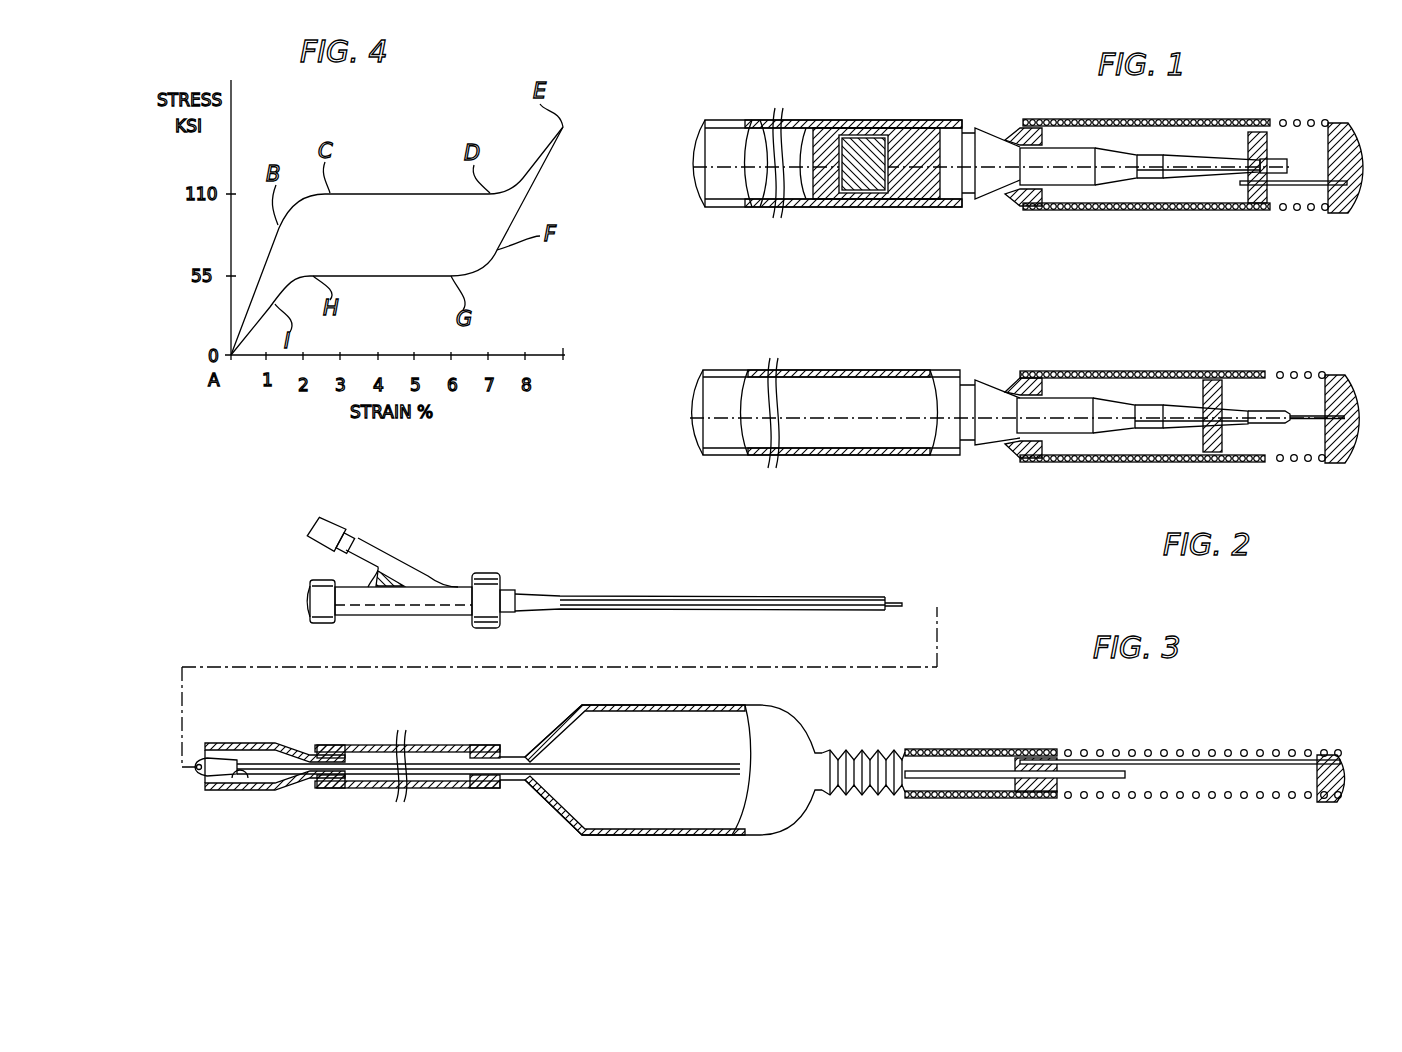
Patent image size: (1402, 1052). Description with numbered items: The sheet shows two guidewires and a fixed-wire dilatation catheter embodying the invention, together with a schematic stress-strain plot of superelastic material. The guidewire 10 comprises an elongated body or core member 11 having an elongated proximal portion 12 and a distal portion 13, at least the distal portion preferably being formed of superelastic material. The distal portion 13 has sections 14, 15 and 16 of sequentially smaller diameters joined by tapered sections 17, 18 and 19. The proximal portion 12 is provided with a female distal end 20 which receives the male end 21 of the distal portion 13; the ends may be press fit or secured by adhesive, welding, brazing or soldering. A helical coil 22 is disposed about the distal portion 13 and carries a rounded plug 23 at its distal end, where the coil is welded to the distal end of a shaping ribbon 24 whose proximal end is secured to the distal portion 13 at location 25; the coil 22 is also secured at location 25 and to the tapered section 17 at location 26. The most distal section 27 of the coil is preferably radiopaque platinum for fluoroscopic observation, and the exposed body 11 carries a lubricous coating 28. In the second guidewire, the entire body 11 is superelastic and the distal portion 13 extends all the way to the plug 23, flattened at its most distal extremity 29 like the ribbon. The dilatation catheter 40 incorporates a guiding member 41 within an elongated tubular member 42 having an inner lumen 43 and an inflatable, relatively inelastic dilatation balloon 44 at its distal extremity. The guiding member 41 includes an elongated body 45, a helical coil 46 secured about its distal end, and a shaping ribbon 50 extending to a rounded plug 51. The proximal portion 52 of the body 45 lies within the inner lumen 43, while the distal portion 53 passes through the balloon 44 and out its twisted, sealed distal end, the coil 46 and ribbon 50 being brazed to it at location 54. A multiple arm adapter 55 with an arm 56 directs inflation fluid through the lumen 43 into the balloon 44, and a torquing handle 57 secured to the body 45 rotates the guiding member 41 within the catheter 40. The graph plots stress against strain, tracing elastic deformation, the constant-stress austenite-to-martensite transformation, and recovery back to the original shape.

In FIG. 1, the guidewire 10 is at (893, 118).
In FIG. 2, the guidewire 10 is at (890, 365).
In FIG. 1, the elongated body 11 is at (925, 207).
In FIG. 2, the elongated body 11 is at (815, 378).
In FIG. 1, the elongated proximal portion 12 is at (795, 188).
In FIG. 2, the elongated proximal portion 12 is at (752, 445).
In FIG. 1, the distal portion 13 is at (985, 200).
In FIG. 2, the distal portion 13 is at (985, 378).
In FIG. 1, the section 14 is at (1060, 158).
In FIG. 2, the section 14 is at (1052, 425).
In FIG. 1, the section 15 is at (1150, 180).
In FIG. 2, the section 15 is at (1143, 422).
In FIG. 1, the section 16 is at (1283, 160).
In FIG. 2, the section 16 is at (1265, 419).
In FIG. 1, the tapered section 17 is at (988, 147).
In FIG. 2, the tapered section 17 is at (982, 428).
In FIG. 1, the tapered section 18 is at (1115, 160).
In FIG. 2, the tapered section 18 is at (1105, 425).
In FIG. 1, the tapered section 19 is at (1200, 160).
In FIG. 2, the tapered section 19 is at (1185, 421).
In FIG. 1, the female distal end 20 is at (830, 199).
In FIG. 1, the male end 21 is at (860, 140).
In FIG. 1, the helical coil 22 is at (1113, 210).
In FIG. 2, the helical coil 22 is at (1100, 372).
In FIG. 1, the rounded plug 23 is at (1350, 142).
In FIG. 2, the rounded plug 23 is at (1340, 390).
In FIG. 1, the shaping ribbon 24 is at (1300, 186).
In FIG. 1, the location 25 is at (1258, 130).
In FIG. 2, the location 25 is at (1220, 386).
In FIG. 1, the location 26 is at (1020, 206).
In FIG. 2, the location 26 is at (1008, 380).
In FIG. 1, the most distal section of the helical coil 27 is at (1285, 211).
In FIG. 2, the most distal section of the helical coil 27 is at (1300, 461).
In FIG. 1, the coating 28 is at (727, 122).
In FIG. 2, the coating 28 is at (720, 385).
In FIG. 2, the most distal extremity 29 is at (1315, 412).
In FIG. 3, the dilatation catheter 40 is at (240, 742).
In FIG. 3, the guiding member 41 is at (598, 775).
In FIG. 3, the tubular member 42 is at (655, 594).
In FIG. 3, the inner lumen 43 is at (255, 790).
In FIG. 3, the dilatation balloon 44 is at (730, 700).
In FIG. 3, the elongated body 45 is at (860, 611).
In FIG. 3, the helical coil 46 is at (1085, 750).
In FIG. 3, the shaping ribbon 50 is at (1225, 766).
In FIG. 3, the rounded plug 51 is at (1345, 756).
In FIG. 3, the proximal portion 52 is at (685, 606).
In FIG. 3, the distal portion 53 is at (620, 765).
In FIG. 3, the location 54 is at (1035, 796).
In FIG. 3, the multiple arm adapter 55 is at (405, 616).
In FIG. 3, the arm 56 is at (400, 566).
In FIG. 3, the torquing handle 57 is at (322, 578).